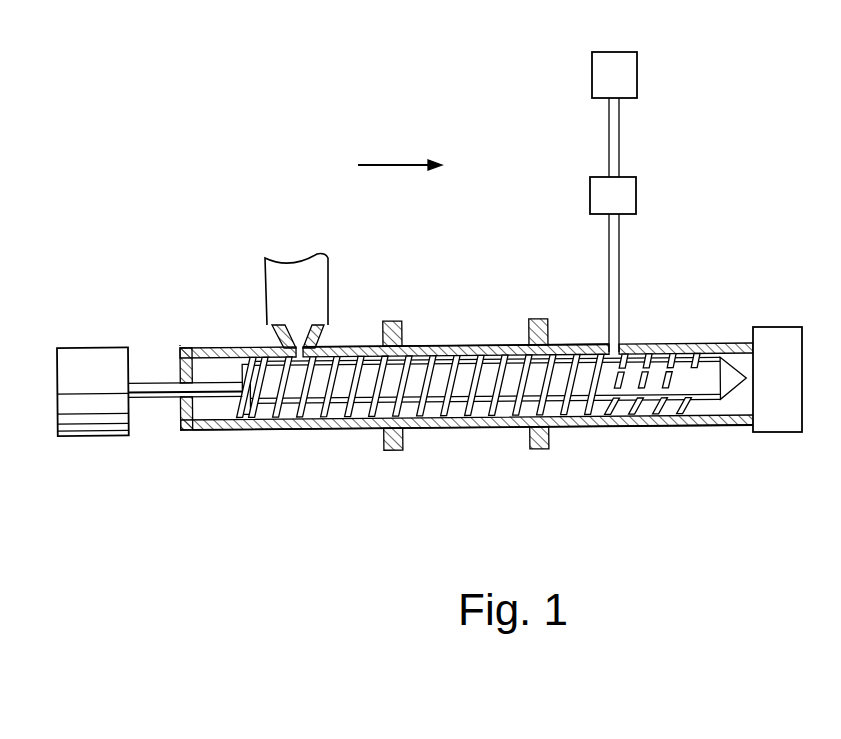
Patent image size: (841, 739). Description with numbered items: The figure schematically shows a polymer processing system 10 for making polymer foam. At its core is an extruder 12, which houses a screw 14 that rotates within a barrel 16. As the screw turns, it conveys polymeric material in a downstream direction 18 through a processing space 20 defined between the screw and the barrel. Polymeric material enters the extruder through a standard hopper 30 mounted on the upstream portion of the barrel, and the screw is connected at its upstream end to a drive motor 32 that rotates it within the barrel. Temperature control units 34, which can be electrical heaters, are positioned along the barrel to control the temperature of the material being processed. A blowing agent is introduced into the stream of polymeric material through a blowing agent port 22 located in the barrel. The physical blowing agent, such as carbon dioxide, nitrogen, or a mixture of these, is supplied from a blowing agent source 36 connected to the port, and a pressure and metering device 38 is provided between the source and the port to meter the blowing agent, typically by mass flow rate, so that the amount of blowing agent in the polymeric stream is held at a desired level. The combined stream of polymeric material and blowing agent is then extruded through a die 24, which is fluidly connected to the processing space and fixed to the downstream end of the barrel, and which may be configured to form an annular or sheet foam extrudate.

The polymer processing system 10 is at (479, 170).
The extruder 12 is at (456, 442).
The screw 14 is at (468, 352).
The barrel 16 is at (305, 432).
The downstream direction 18 is at (400, 155).
The processing space 20 is at (417, 350).
The blowing agent port 22 is at (619, 344).
The die 24 is at (780, 327).
The hopper 30 is at (301, 265).
The drive motor 32 is at (95, 347).
The temperature control units 34 is at (392, 322).
The blowing agent source 36 is at (609, 52).
The pressure and metering device 38 is at (633, 177).